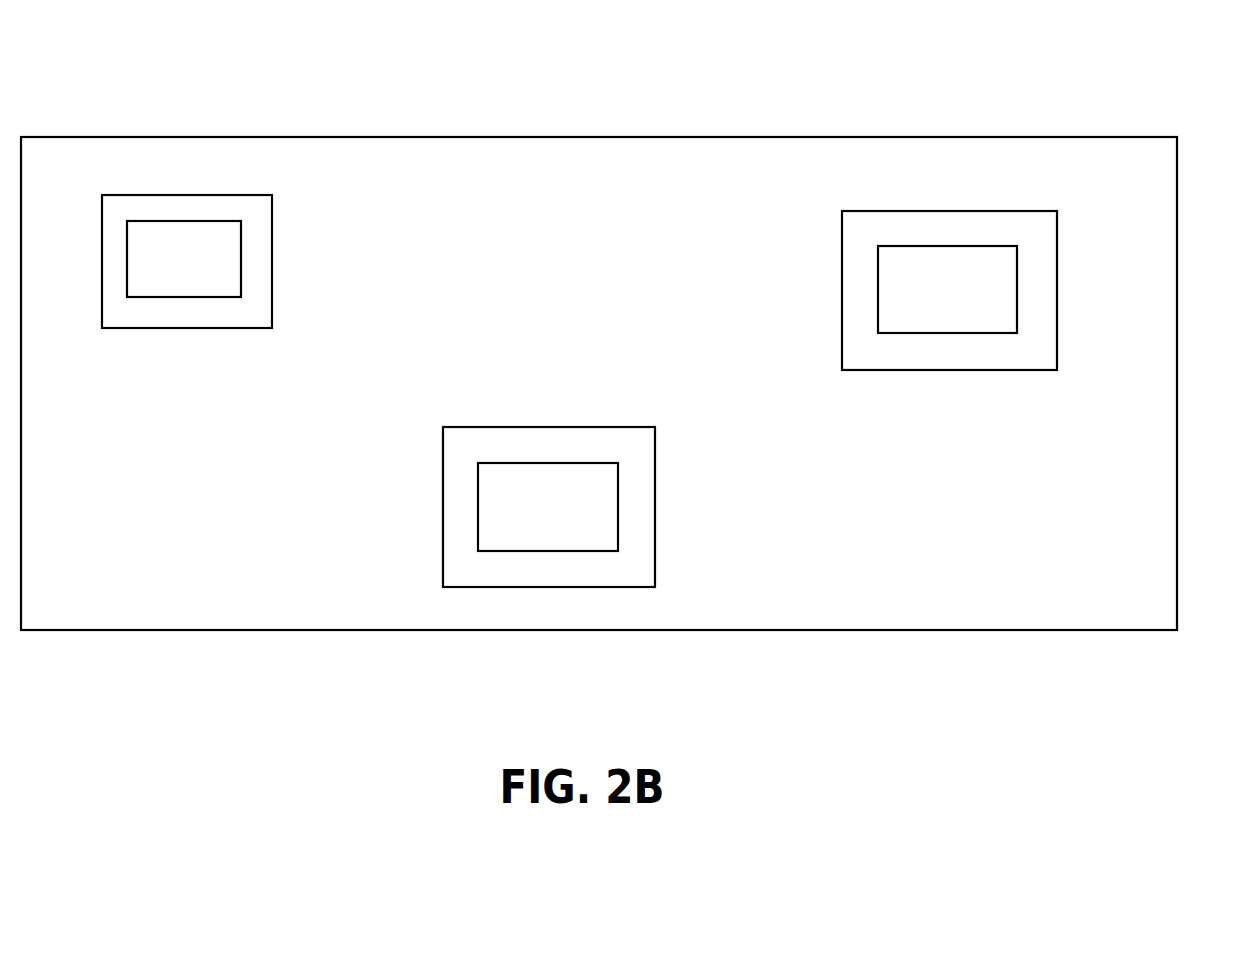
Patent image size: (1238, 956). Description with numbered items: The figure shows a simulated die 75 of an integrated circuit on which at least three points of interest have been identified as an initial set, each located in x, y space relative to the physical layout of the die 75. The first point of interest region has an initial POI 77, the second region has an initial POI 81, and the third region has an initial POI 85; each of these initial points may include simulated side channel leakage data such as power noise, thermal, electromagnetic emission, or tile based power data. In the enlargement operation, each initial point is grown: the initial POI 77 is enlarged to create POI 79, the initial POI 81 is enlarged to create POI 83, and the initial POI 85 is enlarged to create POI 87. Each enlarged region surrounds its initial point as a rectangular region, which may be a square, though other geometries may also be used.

The die 75 is at (907, 137).
The initial POI 77 is at (208, 221).
The POI 79 is at (272, 244).
The initial POI 81 is at (478, 520).
The POI 83 is at (577, 587).
The initial POI 85 is at (980, 246).
The POI 87 is at (1057, 313).